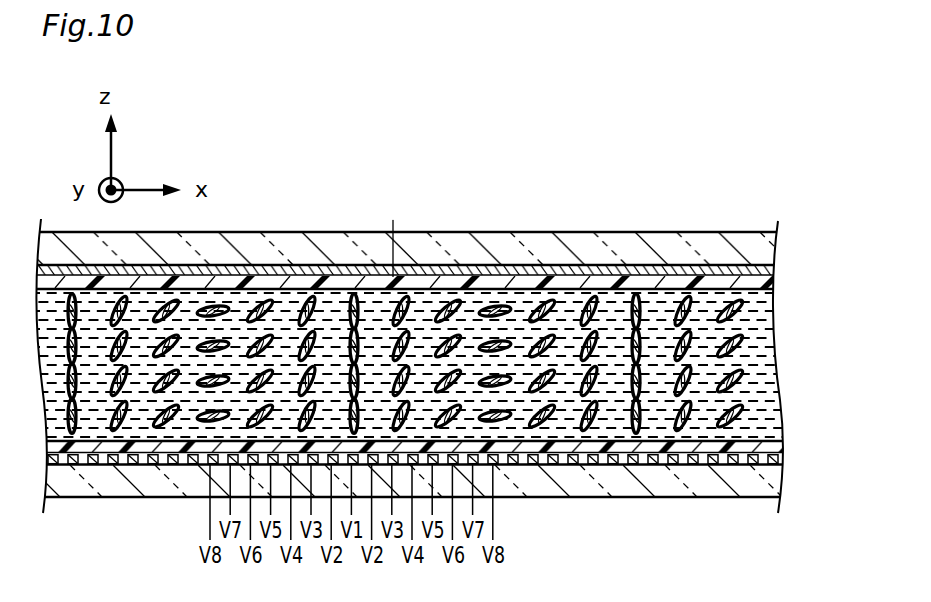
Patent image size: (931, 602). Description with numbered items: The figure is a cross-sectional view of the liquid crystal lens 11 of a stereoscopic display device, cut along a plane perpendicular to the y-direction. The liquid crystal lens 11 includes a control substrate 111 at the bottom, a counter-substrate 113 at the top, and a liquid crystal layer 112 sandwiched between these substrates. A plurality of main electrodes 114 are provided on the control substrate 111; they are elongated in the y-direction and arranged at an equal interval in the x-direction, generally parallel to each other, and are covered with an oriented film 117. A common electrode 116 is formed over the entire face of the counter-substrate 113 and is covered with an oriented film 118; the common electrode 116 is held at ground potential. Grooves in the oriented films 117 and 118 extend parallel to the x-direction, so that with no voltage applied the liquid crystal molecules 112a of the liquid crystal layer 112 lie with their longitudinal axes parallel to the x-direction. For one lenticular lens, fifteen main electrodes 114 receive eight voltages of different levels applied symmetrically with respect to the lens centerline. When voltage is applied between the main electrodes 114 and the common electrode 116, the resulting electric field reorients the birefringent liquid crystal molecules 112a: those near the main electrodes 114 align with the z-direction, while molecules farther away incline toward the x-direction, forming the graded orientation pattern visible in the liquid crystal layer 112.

The liquid crystal lens 11 is at (714, 213).
The control substrate 111 is at (768, 490).
The liquid crystal layer 112 is at (768, 362).
The liquid crystal molecules 112a is at (738, 384).
The counter-substrate 113 is at (762, 250).
The main electrodes 114 is at (782, 462).
The common electrode 116 is at (603, 270).
The oriented film 117 is at (780, 448).
The oriented film 118 is at (766, 284).